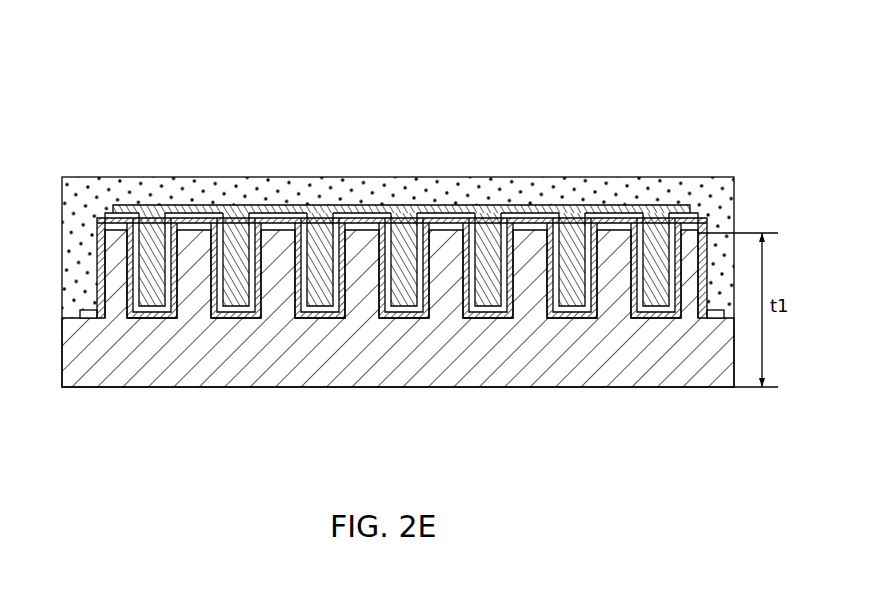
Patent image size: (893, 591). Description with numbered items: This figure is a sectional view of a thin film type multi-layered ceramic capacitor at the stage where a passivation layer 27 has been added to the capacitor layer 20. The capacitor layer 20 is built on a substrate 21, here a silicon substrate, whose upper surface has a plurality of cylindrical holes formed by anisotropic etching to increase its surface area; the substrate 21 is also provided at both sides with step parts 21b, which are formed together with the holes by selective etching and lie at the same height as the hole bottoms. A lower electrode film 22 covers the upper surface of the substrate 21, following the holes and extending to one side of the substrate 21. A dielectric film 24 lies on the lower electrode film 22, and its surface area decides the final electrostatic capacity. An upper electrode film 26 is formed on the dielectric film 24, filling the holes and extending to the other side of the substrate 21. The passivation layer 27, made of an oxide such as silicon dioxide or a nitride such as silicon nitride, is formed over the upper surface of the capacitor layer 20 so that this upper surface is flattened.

The capacitor layer 20 is at (668, 130).
The substrate 21 is at (232, 386).
The step parts 21b is at (88, 302).
The lower electrode film 22 is at (440, 236).
The dielectric film 24 is at (385, 216).
The upper electrode film 26 is at (285, 205).
The passivation layer 27 is at (183, 190).